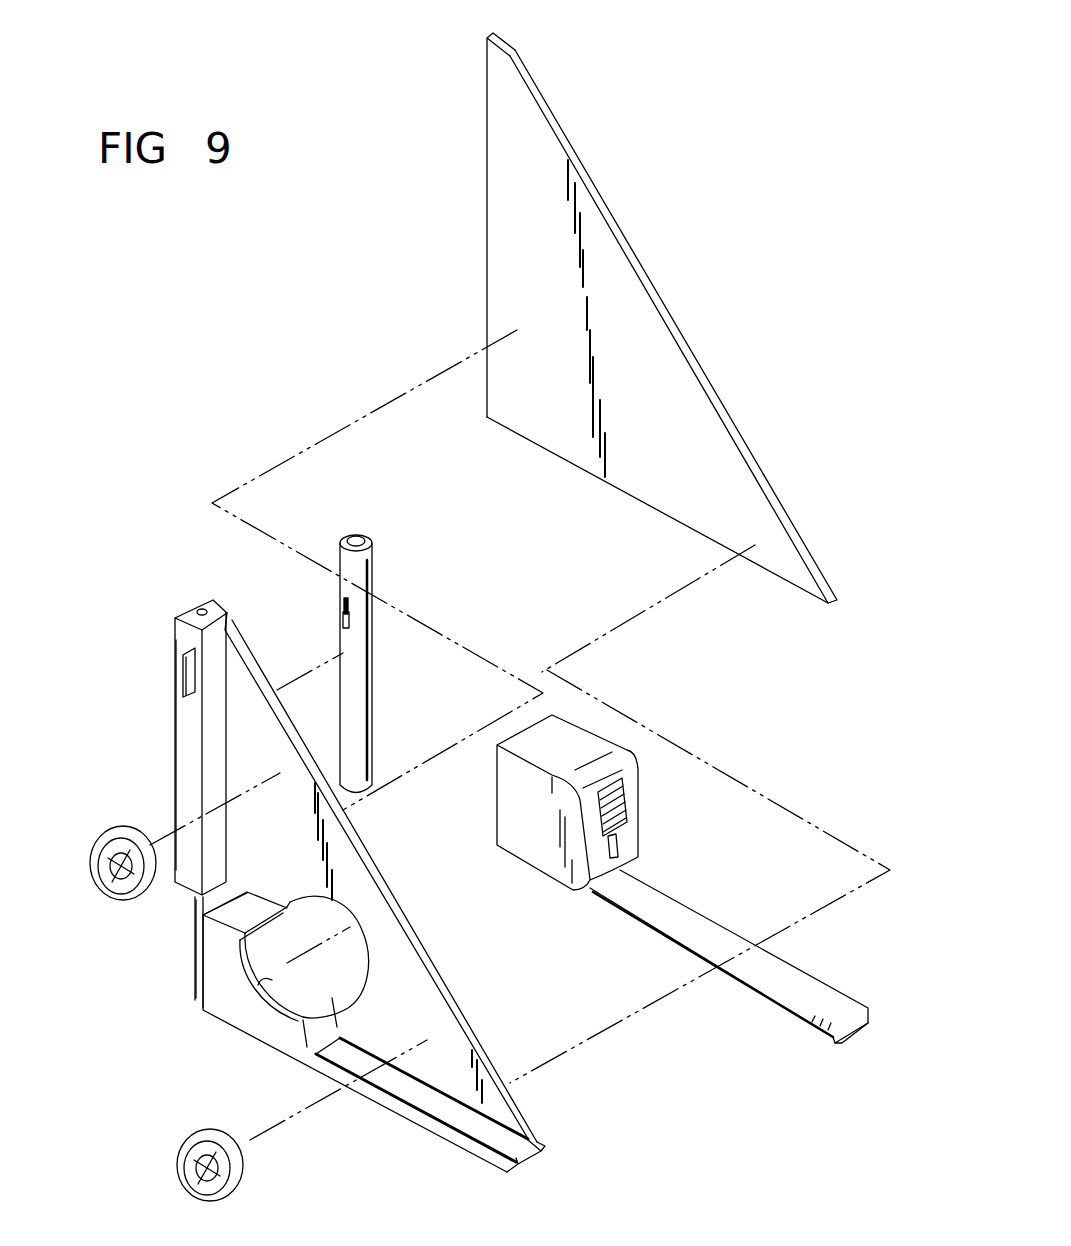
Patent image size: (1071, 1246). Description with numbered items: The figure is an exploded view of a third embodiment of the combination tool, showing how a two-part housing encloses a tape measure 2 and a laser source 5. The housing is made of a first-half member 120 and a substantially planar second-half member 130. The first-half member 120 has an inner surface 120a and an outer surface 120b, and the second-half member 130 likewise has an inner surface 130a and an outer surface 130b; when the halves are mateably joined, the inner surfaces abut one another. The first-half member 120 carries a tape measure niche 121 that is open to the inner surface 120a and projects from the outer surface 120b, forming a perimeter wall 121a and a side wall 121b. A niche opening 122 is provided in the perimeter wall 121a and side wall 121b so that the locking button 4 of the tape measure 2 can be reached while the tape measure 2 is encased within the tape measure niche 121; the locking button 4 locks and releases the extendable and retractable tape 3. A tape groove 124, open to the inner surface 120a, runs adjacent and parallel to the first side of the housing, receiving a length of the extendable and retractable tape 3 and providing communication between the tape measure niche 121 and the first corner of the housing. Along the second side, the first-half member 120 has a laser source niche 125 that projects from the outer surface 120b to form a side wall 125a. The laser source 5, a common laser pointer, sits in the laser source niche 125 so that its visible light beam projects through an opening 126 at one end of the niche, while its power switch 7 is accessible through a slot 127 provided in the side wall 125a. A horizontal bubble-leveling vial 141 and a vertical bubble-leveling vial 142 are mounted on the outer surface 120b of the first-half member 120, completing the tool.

The second-half member 130 is at (671, 318).
The inner surface 130a is at (711, 476).
The outer surface 130b is at (571, 139).
The laser source 5 is at (362, 664).
The power switch 7 is at (338, 607).
The laser source niche 125 is at (148, 741).
The side wall 125a is at (190, 710).
The opening 126 is at (199, 608).
The slot 127 is at (183, 678).
The first-half member 120 is at (377, 913).
The inner surface 120a is at (518, 1103).
The outer surface 120b is at (447, 1140).
The tape groove 124 is at (532, 1155).
The tape measure niche 121 is at (216, 990).
The perimeter wall 121a is at (228, 912).
The side wall 121b is at (218, 957).
The niche opening 122 is at (270, 998).
The horizontal bubble-leveling vial 141 is at (100, 880).
The vertical bubble-leveling vial 142 is at (244, 1166).
The tape measure 2 is at (585, 802).
The locking button 4 is at (627, 806).
The extendable and retractable tape 3 is at (795, 978).